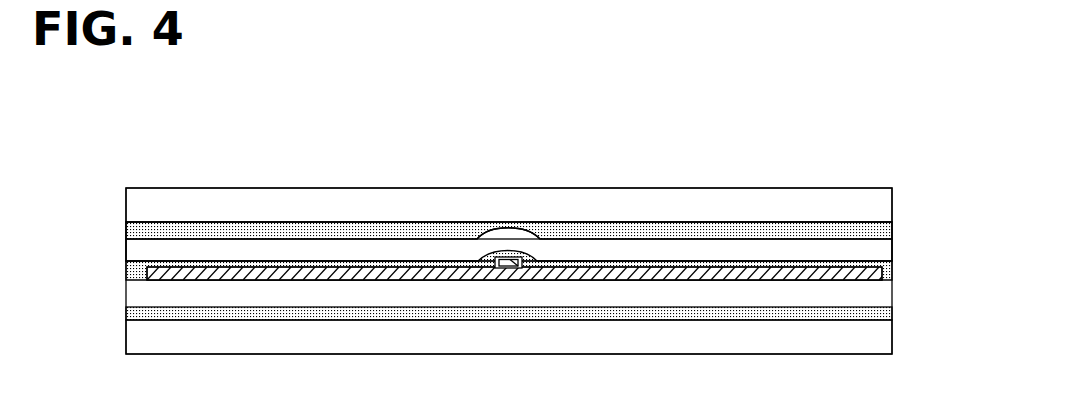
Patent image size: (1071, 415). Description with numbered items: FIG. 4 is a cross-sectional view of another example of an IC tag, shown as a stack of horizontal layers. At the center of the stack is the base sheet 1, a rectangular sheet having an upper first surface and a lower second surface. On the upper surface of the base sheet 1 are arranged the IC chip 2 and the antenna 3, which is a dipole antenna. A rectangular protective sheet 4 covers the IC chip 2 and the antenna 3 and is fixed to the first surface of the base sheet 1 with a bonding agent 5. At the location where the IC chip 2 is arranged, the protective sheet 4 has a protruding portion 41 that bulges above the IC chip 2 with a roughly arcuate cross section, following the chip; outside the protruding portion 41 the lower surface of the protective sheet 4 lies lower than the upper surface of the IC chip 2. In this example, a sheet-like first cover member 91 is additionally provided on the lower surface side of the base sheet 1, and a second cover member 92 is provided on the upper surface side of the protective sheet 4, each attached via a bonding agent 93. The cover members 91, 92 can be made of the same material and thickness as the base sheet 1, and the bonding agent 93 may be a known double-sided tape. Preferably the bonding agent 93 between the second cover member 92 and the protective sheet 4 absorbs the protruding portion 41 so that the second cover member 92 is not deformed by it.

The base sheet 1 is at (873, 302).
The IC chip 2 is at (518, 258).
The antenna 3 is at (360, 263).
The protective sheet 4 is at (756, 245).
The protruding portion 41 is at (503, 237).
The bonding agent 5 is at (127, 268).
The first cover member 91 is at (332, 343).
The second cover member 92 is at (240, 203).
The bonding agent 93 is at (127, 227).